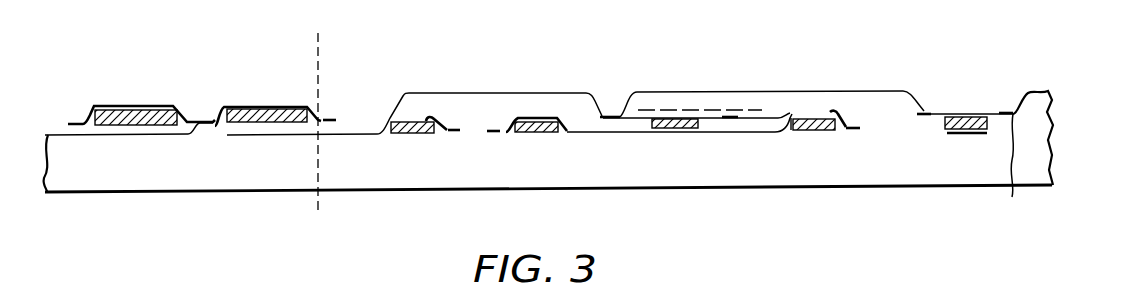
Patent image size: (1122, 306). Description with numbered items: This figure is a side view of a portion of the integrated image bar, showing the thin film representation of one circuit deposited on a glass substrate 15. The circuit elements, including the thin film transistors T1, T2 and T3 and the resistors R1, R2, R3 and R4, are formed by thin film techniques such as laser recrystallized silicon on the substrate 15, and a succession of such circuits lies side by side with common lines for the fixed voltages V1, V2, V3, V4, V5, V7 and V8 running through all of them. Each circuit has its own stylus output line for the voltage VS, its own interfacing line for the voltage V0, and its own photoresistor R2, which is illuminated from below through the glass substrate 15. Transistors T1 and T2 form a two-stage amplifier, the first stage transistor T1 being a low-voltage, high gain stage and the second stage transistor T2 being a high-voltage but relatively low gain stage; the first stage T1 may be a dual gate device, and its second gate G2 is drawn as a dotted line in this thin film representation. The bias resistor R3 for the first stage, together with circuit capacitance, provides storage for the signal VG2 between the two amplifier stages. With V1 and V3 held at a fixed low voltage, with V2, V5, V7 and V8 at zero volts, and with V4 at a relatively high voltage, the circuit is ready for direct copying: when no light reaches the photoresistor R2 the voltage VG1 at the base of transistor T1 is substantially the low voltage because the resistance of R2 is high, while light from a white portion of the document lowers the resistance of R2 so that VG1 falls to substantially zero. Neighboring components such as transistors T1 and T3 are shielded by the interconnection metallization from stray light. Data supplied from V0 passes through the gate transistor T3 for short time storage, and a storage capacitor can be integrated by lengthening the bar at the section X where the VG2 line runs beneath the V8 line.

The substrate 15 is at (1040, 154).
The voltage line V4 is at (72, 124).
The resistor R4 is at (138, 110).
The transistor T2 is at (263, 101).
The voltage line V8 is at (332, 119).
The stylus output line VS is at (155, 137).
The section line X- X is at (319, 126).
The signal VG2 line VG2 is at (453, 93).
The bias resistor R3 is at (415, 134).
The voltage line V3 is at (460, 133).
The voltage line V1 is at (488, 133).
The resistor R1 is at (542, 134).
The voltage VG1 is at (733, 133).
The transistor T1 is at (668, 135).
The voltage line V7 is at (727, 116).
The second gate G2 is at (758, 111).
The voltage line V2 is at (857, 127).
The photoresistor R2 is at (820, 134).
The transistor T3 is at (966, 136).
The voltage line V5 is at (1014, 172).
The interfacing line V0 is at (1040, 91).